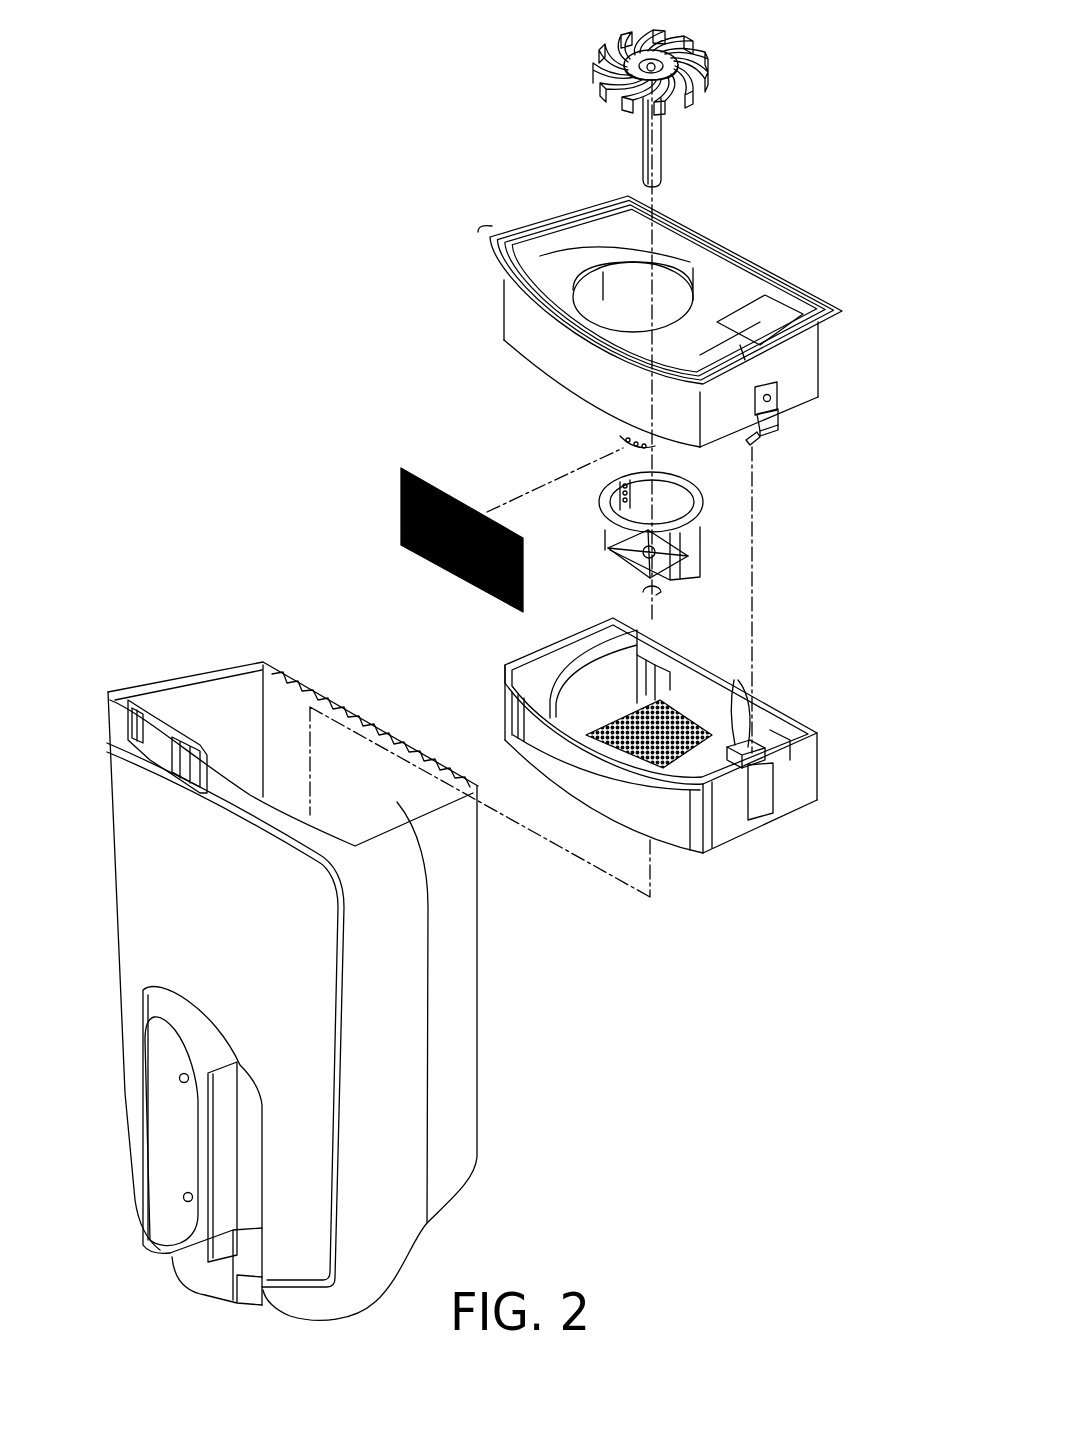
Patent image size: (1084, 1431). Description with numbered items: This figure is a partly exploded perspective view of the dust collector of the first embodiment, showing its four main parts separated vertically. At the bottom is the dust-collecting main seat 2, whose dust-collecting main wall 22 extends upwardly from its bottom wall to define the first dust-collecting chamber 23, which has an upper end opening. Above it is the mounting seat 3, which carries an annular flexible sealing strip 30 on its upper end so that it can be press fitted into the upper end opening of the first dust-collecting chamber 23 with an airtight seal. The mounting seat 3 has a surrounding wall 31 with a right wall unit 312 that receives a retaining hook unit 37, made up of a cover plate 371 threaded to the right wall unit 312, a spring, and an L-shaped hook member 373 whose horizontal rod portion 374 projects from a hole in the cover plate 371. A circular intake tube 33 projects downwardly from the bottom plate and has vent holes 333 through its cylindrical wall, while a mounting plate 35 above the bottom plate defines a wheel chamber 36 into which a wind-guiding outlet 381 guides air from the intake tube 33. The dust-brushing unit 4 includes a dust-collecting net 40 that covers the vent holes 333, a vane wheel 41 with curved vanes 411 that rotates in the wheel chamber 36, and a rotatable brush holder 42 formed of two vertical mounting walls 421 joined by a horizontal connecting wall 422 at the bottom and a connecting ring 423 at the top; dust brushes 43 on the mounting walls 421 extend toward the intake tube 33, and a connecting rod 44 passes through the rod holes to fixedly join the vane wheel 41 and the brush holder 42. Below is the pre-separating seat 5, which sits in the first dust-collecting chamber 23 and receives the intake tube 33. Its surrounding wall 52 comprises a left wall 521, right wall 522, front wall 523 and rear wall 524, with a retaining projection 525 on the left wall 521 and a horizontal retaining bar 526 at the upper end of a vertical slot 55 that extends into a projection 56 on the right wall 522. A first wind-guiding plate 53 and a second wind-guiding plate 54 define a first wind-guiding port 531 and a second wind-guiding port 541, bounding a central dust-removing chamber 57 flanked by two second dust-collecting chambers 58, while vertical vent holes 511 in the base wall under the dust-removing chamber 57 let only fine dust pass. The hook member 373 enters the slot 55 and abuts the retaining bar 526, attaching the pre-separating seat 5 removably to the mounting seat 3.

The dust-collecting main seat 2 is at (325, 991).
The dust-collecting main wall 22 is at (455, 1092).
The first dust-collecting chamber 23 is at (400, 797).
The mounting seat 3 is at (669, 312).
The annular flexible sealing strip 30 is at (836, 312).
The surrounding wall 31 is at (669, 403).
The right wall unit 312 is at (800, 383).
The intake tube 33 is at (588, 413).
The vent holes 333 is at (654, 442).
The mounting plate 35 is at (535, 253).
The wheel chamber 36 is at (632, 275).
The wind-guiding outlet 381 is at (595, 283).
The retaining hook unit 37 is at (818, 454).
The cover plate 371 is at (772, 388).
The hook member 373 is at (777, 432).
The horizontal rod portion 374 is at (783, 420).
The dust-brushing unit 4 is at (621, 309).
The dust-collecting net 40 is at (420, 480).
The vane wheel 41 is at (709, 57).
The curved vanes 411 is at (688, 38).
The rotatable brush holder 42 is at (689, 521).
The mounting walls 421 is at (690, 560).
The horizontal connecting wall 422 is at (628, 540).
The connecting ring 423 is at (700, 506).
The dust brushes 43 is at (628, 478).
The connecting rod 44 is at (662, 135).
The pre-separating seat 5 is at (646, 766).
The surrounding wall 52 is at (699, 780).
The left wall 521 is at (577, 633).
The right wall 522 is at (792, 792).
The front wall 523 is at (680, 830).
The rear wall 524 is at (778, 730).
The retaining projection 525 is at (570, 643).
The horizontal retaining bar 526 is at (762, 757).
The first wind-guiding plate 53 is at (592, 677).
The first wind-guiding port 531 is at (645, 665).
The second wind-guiding plate 54 is at (624, 796).
The second wind-guiding port 541 is at (697, 765).
The vertical slot 55 is at (757, 800).
The projection 56 is at (733, 743).
The dust-removing chamber 57 is at (647, 667).
The second dust-collecting chambers 58 is at (777, 728).
The vertical vent holes 511 is at (587, 737).